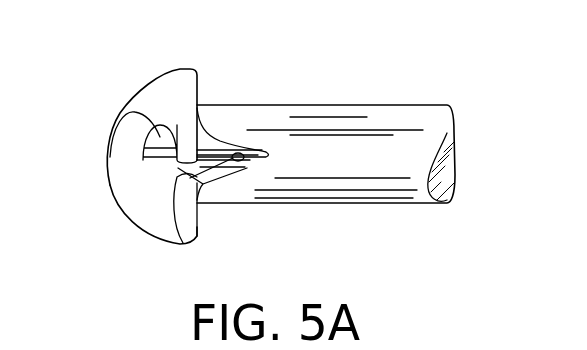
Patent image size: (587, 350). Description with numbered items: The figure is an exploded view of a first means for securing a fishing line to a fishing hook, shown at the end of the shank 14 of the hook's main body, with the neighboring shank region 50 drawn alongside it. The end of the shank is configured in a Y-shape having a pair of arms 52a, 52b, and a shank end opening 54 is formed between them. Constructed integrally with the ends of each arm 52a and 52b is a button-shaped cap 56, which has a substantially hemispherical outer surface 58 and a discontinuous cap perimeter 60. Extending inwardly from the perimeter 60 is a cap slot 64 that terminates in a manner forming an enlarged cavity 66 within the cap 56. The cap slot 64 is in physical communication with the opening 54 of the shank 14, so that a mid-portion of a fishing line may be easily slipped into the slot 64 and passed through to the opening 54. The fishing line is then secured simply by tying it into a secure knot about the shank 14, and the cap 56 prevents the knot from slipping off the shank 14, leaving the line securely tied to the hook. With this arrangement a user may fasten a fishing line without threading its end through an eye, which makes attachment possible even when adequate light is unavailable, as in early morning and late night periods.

The shank 14 is at (420, 120).
The tube 50 is at (347, 105).
The arm 52a is at (232, 122).
The arm 52b is at (230, 182).
The shank end opening 54 is at (252, 158).
The button-shaped cap 56 is at (113, 173).
The hemispherical outer surface 58 is at (158, 98).
The cap perimeter 60 is at (200, 223).
The cap slot 64 is at (148, 213).
The enlarged cavity 66 is at (130, 104).